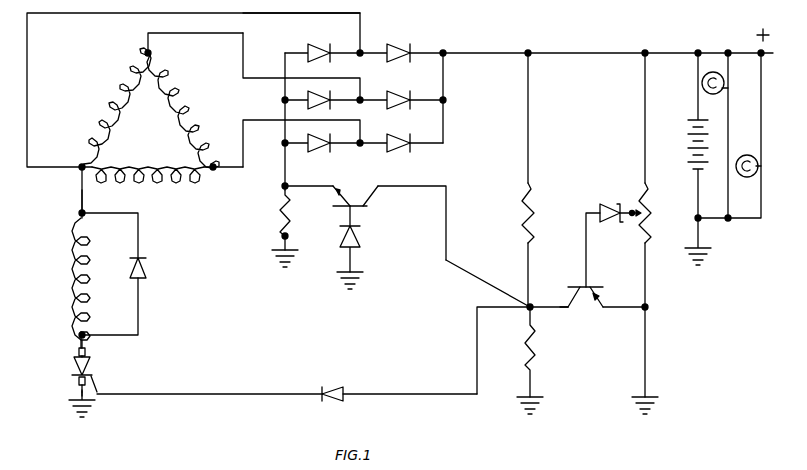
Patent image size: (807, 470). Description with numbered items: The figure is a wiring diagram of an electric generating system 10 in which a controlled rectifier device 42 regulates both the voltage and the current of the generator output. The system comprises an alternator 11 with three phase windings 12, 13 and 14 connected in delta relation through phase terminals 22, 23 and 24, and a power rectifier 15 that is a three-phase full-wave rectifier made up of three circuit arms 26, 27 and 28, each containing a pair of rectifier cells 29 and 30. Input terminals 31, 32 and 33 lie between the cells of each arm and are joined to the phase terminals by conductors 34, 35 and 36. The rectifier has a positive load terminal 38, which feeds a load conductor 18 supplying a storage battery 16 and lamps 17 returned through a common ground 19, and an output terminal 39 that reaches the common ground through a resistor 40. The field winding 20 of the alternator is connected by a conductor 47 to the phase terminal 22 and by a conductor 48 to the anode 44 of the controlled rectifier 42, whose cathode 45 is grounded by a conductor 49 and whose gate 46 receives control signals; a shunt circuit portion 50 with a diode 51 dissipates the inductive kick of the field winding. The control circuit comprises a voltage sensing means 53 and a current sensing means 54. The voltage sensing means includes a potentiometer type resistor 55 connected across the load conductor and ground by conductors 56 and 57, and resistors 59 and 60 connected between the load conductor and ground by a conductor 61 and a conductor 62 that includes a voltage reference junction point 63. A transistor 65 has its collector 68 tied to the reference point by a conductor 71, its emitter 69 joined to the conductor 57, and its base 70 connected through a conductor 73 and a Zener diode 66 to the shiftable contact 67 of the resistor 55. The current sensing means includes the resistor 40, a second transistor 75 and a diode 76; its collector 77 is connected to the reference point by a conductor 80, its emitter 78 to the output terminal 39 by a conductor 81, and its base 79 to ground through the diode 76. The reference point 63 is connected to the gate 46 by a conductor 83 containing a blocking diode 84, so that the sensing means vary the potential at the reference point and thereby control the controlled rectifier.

The electric generating system 10 is at (475, 52).
The alternator 11 is at (153, 120).
The phase winding 12 is at (120, 80).
The phase winding 13 is at (178, 84).
The phase winding 14 is at (143, 180).
The power rectifier 15 is at (426, 86).
The storage battery 16 is at (693, 120).
The lamps 17 is at (720, 93).
The load conductor 18 is at (596, 52).
The common ground 19 is at (280, 248).
The field winding 20 is at (72, 266).
The phase winding terminal 22 is at (80, 169).
The phase winding terminal 23 is at (146, 52).
The phase winding terminal 24 is at (223, 181).
The circuit arm 26 is at (362, 57).
The circuit arm 27 is at (362, 103).
The circuit arm 28 is at (365, 146).
The rectifier cell 29 is at (316, 48).
The rectifier cell 30 is at (396, 48).
The input terminal 31 is at (364, 50).
The input terminal 32 is at (361, 99).
The input terminal 33 is at (362, 142).
The conductor 34 is at (247, 15).
The conductor 35 is at (244, 62).
The conductor 36 is at (244, 150).
The positive output terminal 38 is at (448, 58).
The output terminal 39 is at (283, 188).
The resistor 40 is at (280, 215).
The controlled rectifier device 42 is at (99, 369).
The anode 44 is at (78, 350).
The cathode 45 is at (78, 381).
The gate 46 is at (99, 384).
The conductor 47 is at (83, 199).
The conductor 48 is at (88, 343).
The conductor 49 is at (74, 398).
The circuit portion 50 is at (140, 228).
The diode 51 is at (148, 270).
The voltage sensing means 53 is at (633, 195).
The current sensing means 54 is at (326, 205).
The potentiometer type resistor 55 is at (648, 200).
The conductor 56 is at (643, 111).
The conductor 57 is at (650, 300).
The resistor 59 is at (524, 204).
The resistor 60 is at (533, 350).
The conductor 61 is at (530, 108).
The conductor 62 is at (527, 268).
The voltage reference junction point 63 is at (525, 310).
The transistor 65 is at (600, 296).
The Zener diode 66 is at (600, 208).
The shiftable contact 67 is at (630, 217).
The collector electrode 68 is at (580, 306).
The emitter electrode 69 is at (606, 306).
The base 70 is at (574, 287).
The conductor 71 is at (548, 308).
The conductor 73 is at (586, 232).
The second transistor 75 is at (368, 207).
The diode 76 is at (362, 238).
The collector electrode 77 is at (376, 189).
The emitter electrode 78 is at (343, 192).
The base 79 is at (345, 208).
The conductor 80 is at (470, 270).
The conductor 81 is at (298, 186).
The conductor 83 is at (276, 392).
The blocking diode 84 is at (336, 388).